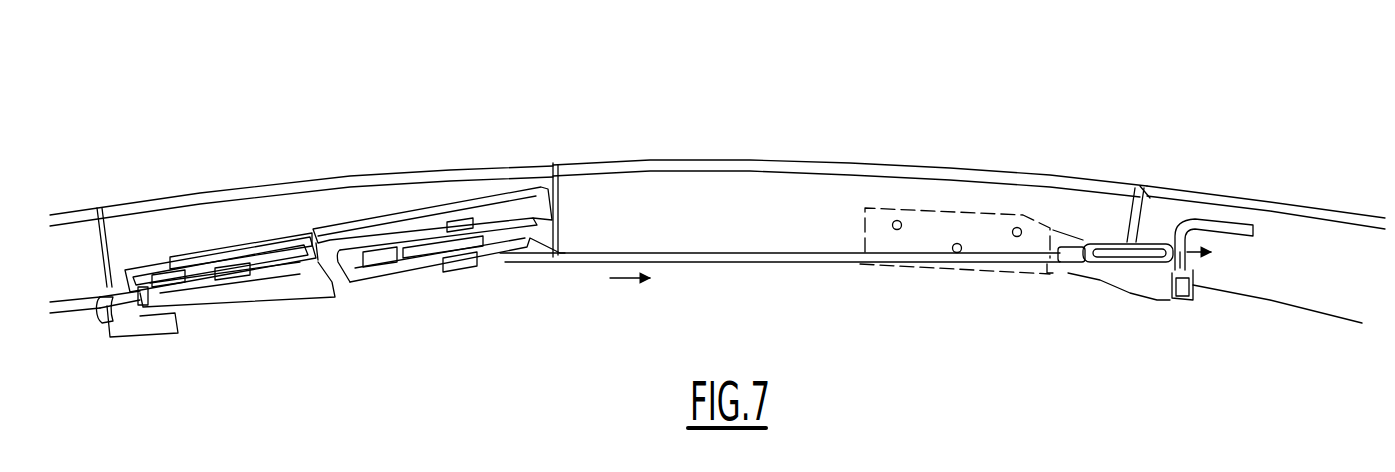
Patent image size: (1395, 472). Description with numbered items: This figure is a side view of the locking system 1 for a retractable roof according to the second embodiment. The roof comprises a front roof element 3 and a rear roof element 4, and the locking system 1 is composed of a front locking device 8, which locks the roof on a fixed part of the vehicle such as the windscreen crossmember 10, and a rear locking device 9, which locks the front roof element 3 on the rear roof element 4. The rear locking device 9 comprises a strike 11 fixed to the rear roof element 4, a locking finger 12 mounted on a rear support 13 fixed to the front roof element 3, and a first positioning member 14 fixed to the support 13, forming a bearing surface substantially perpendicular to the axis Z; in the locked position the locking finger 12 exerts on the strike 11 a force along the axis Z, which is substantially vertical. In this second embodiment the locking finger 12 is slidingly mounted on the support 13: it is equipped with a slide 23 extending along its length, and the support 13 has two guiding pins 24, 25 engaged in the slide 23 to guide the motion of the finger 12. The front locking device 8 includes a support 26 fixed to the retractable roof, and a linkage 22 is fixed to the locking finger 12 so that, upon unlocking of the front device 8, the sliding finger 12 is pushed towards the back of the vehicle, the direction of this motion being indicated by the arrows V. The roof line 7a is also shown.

The locking system 1 is at (731, 153).
The front roof element 3 is at (672, 164).
The rear roof element 4 is at (1267, 203).
The roof opening edge 7a is at (1288, 275).
The front locking device 8 is at (335, 158).
The rear locking device 9 is at (1058, 164).
The windscreen crossmember 10 is at (63, 228).
The strike 11 is at (1197, 222).
The locking finger 12 is at (1128, 258).
The rear support 13 is at (925, 228).
The first positioning member 14 is at (1182, 287).
The linkage 22 is at (810, 261).
The slide 23 is at (1127, 250).
The guiding pin 24 is at (1103, 263).
The guiding pin 25 is at (1164, 262).
The support 26 is at (497, 253).
The axis Z is at (1209, 164).
The direction of movement V is at (910, 268).